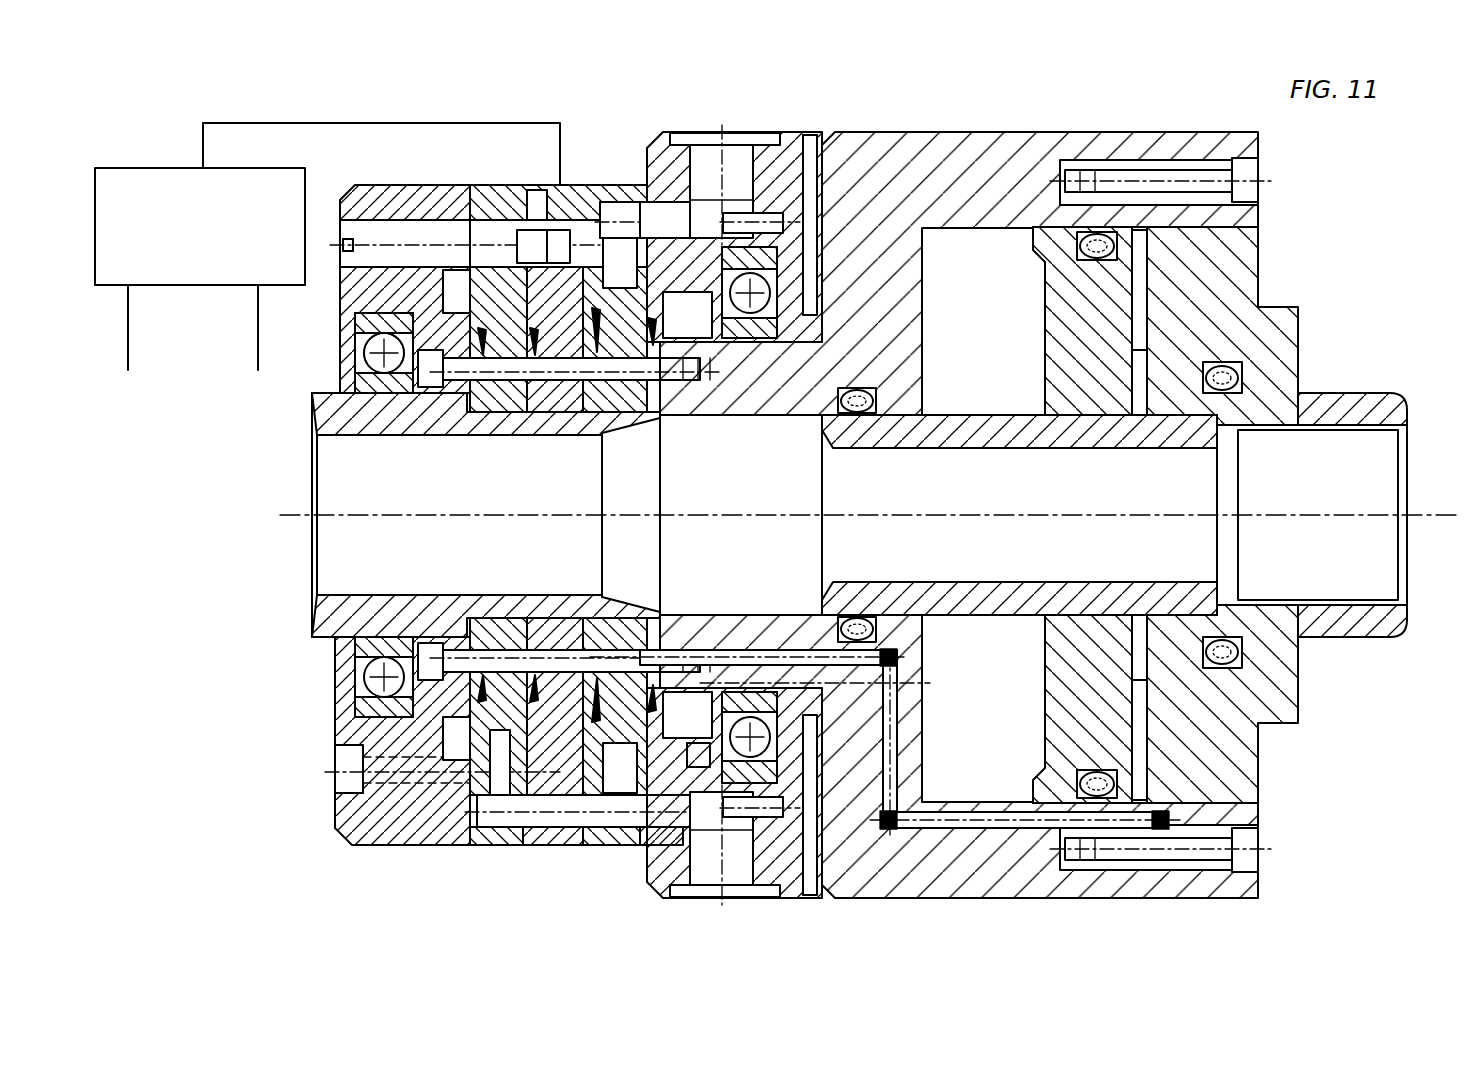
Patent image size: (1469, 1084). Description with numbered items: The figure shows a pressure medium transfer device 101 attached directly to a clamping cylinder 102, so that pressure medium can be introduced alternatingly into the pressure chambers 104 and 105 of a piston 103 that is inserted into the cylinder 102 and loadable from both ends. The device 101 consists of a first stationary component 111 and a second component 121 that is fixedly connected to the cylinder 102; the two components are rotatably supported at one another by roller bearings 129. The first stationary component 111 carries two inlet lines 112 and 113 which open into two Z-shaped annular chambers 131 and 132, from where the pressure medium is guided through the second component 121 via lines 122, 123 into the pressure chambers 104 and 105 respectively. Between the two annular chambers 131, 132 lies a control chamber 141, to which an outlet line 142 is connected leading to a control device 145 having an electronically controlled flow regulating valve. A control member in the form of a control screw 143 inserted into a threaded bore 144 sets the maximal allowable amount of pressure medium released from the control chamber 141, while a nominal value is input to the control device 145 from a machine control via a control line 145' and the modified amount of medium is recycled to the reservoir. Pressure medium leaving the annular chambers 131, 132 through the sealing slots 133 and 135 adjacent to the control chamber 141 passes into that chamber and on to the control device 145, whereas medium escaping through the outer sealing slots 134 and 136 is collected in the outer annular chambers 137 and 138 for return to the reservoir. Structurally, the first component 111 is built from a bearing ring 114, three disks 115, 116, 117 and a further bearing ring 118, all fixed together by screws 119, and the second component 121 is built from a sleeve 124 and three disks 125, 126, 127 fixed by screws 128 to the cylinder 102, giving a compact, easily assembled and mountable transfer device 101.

The device 101 is at (185, 838).
The cylinder 102 is at (1085, 190).
The piston 103 is at (1062, 275).
The pressure chamber 104 is at (1150, 235).
The pressure chamber 105 is at (995, 245).
The first stationary component 111 is at (620, 850).
The inlet line 112 is at (742, 162).
The inlet line 113 is at (738, 862).
The bearing ring 114 is at (810, 165).
The disk 115 is at (595, 850).
The disk 116 is at (525, 850).
The disk 117 is at (473, 850).
The further bearing ring 118 is at (370, 845).
The screws 119 is at (340, 780).
The second component 121 is at (343, 590).
The line 122 is at (640, 830).
The line 123 is at (458, 660).
The sleeve 124 is at (330, 623).
The disk 125 is at (608, 650).
The disk 126 is at (560, 648).
The disk 127 is at (482, 648).
The screws 128 is at (430, 395).
The roller bearings 129 is at (398, 300).
The annular chamber 131 is at (670, 413).
The annular chamber 132 is at (372, 357).
The sealing slot 133 is at (616, 418).
The outer sealing slot 134 is at (672, 390).
The sealing slot 135 is at (548, 413).
The outer sealing slot 136 is at (492, 413).
The annular chamber 137 is at (460, 270).
The annular chamber 138 is at (688, 742).
The control chamber 141 is at (527, 648).
The outlet line 142 is at (600, 225).
The control screw 143 is at (372, 235).
The threaded bore 144 is at (540, 235).
The control device 145 is at (327, 180).
The control line 145' is at (108, 351).